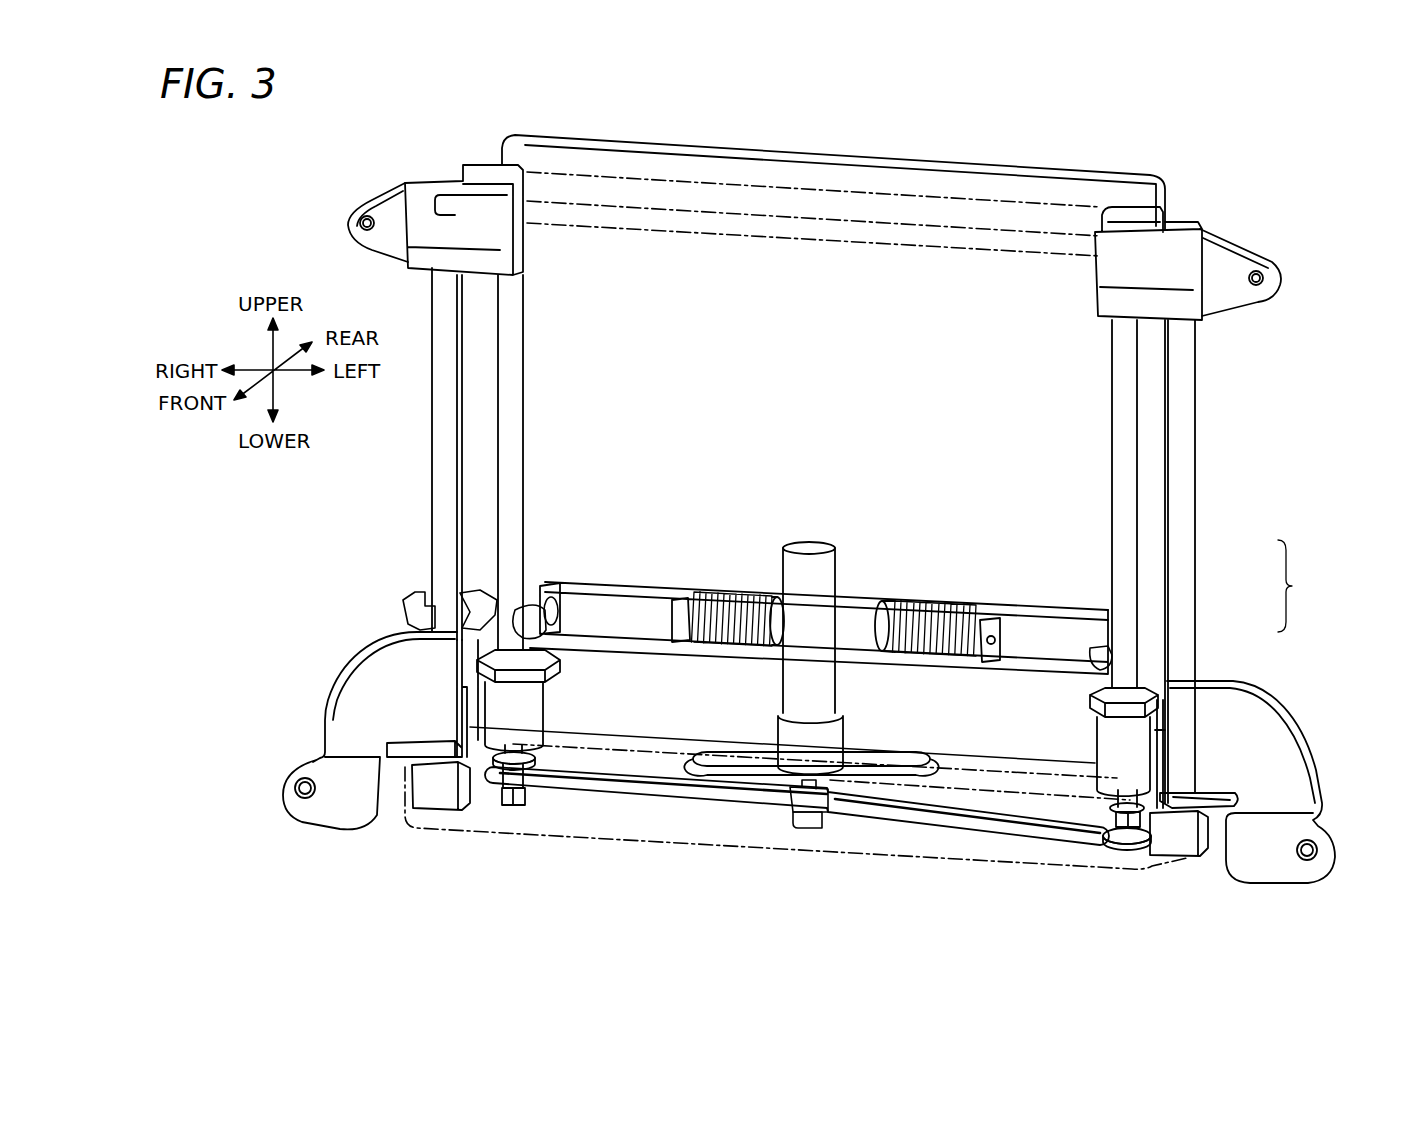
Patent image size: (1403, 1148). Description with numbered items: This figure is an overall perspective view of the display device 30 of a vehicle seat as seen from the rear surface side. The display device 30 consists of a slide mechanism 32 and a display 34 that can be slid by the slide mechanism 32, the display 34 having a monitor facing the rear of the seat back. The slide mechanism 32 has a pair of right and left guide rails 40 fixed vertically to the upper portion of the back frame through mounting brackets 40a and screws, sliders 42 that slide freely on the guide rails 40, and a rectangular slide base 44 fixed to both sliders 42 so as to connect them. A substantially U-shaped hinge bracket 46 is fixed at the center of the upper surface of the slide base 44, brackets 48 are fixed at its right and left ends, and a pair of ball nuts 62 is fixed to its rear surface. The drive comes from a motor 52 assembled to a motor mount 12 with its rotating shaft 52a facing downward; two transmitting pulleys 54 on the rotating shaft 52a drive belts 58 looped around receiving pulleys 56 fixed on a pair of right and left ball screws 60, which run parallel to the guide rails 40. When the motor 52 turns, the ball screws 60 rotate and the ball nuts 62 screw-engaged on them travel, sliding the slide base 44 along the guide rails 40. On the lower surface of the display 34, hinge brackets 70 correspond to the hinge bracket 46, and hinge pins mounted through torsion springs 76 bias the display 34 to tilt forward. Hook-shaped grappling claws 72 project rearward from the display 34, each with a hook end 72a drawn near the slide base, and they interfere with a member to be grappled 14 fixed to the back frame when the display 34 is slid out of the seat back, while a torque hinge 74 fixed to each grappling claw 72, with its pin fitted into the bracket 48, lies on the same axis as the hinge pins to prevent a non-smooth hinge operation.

The motor mount 12 is at (598, 818).
The member to be grappled 14 is at (808, 207).
The display device 30 is at (672, 138).
The slide mechanism 32 is at (1302, 586).
The display 34 is at (995, 186).
The guide rail 40 is at (443, 608).
The mounting bracket 40a is at (388, 203).
The slider 42 is at (467, 668).
The slide base 44 is at (1185, 582).
The hinge bracket 46 is at (848, 650).
The bracket 48 is at (475, 606).
The motor 52 is at (812, 560).
The rotating shaft 52a is at (790, 790).
The transmitting pulley 54 is at (803, 815).
The receiving pulley 56 is at (506, 808).
The belt 58 is at (663, 795).
The ball screw 60 is at (548, 752).
The ball nut 62 is at (525, 702).
The hinge bracket 70 is at (655, 590).
The grappling claw 72 is at (535, 600).
The hook portion 72a is at (500, 613).
The torque hinge 74 is at (566, 605).
The torsion spring 76 is at (716, 597).